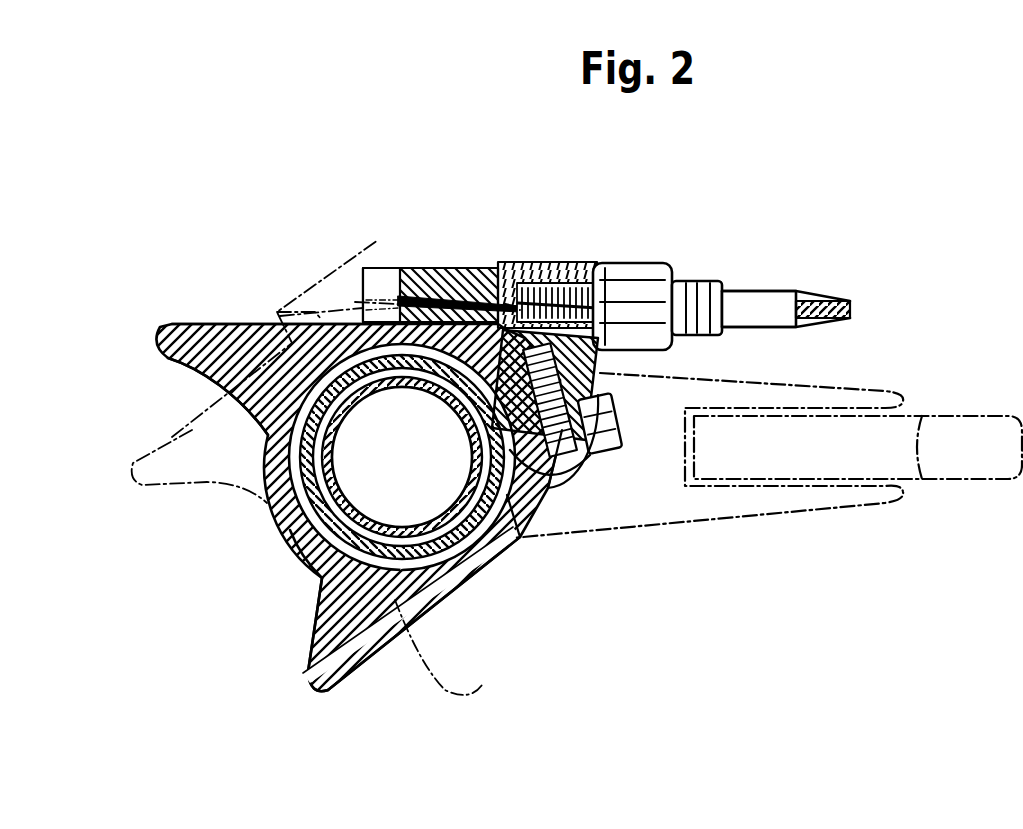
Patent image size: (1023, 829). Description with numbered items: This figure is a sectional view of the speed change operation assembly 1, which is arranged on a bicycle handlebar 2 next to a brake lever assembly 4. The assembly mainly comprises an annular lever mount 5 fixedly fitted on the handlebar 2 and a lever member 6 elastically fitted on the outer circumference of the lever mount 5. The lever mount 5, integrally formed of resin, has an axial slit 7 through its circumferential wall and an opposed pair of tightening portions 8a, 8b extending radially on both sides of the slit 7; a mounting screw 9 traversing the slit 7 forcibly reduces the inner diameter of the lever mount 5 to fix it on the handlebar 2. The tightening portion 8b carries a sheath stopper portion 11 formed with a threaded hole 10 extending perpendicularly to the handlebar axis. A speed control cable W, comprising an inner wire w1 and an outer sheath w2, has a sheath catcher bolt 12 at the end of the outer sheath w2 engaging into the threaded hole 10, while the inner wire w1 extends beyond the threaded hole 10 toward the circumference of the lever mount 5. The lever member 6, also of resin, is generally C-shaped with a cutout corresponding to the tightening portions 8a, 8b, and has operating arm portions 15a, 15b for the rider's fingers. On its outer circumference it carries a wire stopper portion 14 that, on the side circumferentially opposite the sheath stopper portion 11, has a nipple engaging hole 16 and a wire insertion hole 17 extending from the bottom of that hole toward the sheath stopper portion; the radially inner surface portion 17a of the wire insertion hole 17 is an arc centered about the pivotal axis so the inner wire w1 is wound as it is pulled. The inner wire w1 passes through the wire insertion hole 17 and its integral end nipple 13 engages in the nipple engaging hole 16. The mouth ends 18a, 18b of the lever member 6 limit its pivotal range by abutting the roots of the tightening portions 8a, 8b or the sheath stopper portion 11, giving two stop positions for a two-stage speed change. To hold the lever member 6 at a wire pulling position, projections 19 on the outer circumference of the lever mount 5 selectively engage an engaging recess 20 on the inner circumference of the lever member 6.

The speed change operation assembly 1 is at (257, 586).
The handlebar 2 is at (275, 507).
The brake lever assembly 4 is at (828, 505).
The lever mount 5 is at (415, 575).
The lever member 6 is at (365, 668).
The axial slit 7 is at (600, 392).
The tightening portion 8a is at (580, 400).
The tightening portion 8b is at (596, 378).
The mounting screw 9 is at (560, 440).
The threaded hole 10 is at (525, 266).
The sheath stopper portion 11 is at (562, 282).
The sheath catcher bolt 12 is at (660, 265).
The end nipple 13 is at (405, 265).
The wire stopper portion 14 is at (458, 262).
The operating arm portion 15a is at (318, 690).
The operating arm portion 15b is at (168, 329).
The nipple engaging hole 16 is at (380, 262).
The wire insertion hole 17 is at (470, 264).
The radially inner surface portion 17a is at (495, 270).
The mouth end 18a is at (517, 537).
The mouth end 18b is at (452, 405).
The projections 19 is at (523, 492).
The engaging recess 20 is at (467, 573).
The speed control cable W is at (890, 216).
The inner wire w1 is at (840, 300).
The outer sheath w2 is at (760, 287).